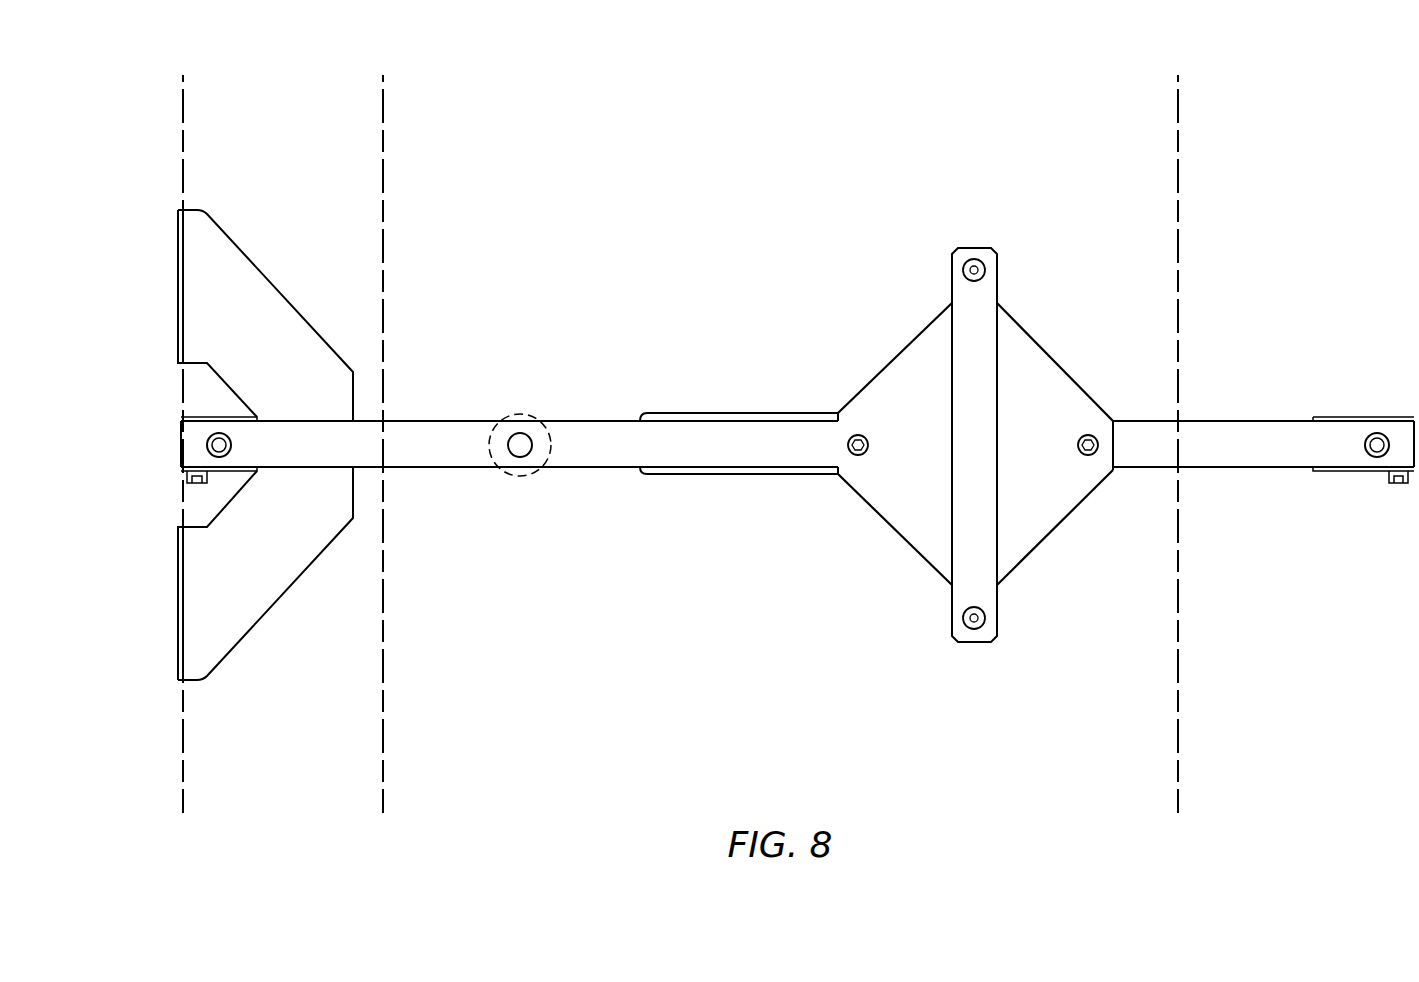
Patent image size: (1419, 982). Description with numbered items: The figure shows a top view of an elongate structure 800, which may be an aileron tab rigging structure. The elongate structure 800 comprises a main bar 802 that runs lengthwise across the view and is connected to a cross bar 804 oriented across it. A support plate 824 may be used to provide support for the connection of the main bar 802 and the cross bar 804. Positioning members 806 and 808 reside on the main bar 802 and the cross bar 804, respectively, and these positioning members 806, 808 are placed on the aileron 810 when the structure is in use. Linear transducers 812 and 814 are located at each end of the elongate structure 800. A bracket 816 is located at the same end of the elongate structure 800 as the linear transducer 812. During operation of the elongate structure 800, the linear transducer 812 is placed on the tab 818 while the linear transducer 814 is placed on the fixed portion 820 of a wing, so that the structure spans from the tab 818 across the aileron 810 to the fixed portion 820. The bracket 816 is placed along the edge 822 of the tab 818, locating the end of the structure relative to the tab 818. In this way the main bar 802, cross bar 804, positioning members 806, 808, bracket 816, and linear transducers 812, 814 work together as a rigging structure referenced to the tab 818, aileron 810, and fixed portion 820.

The elongate structure 800 is at (875, 86).
The main bar 802 is at (467, 421).
The cross bar 804 is at (952, 282).
The positioning member 806 is at (518, 470).
The positioning members 808 is at (972, 262).
The aileron 810 is at (802, 760).
The linear transducer 812 is at (207, 445).
The linear transducer 814 is at (1377, 432).
The bracket 816 is at (268, 295).
The tab 818 is at (305, 760).
The fixed portion 820 is at (1299, 760).
The edge 822 is at (183, 97).
The support plate 824 is at (897, 515).